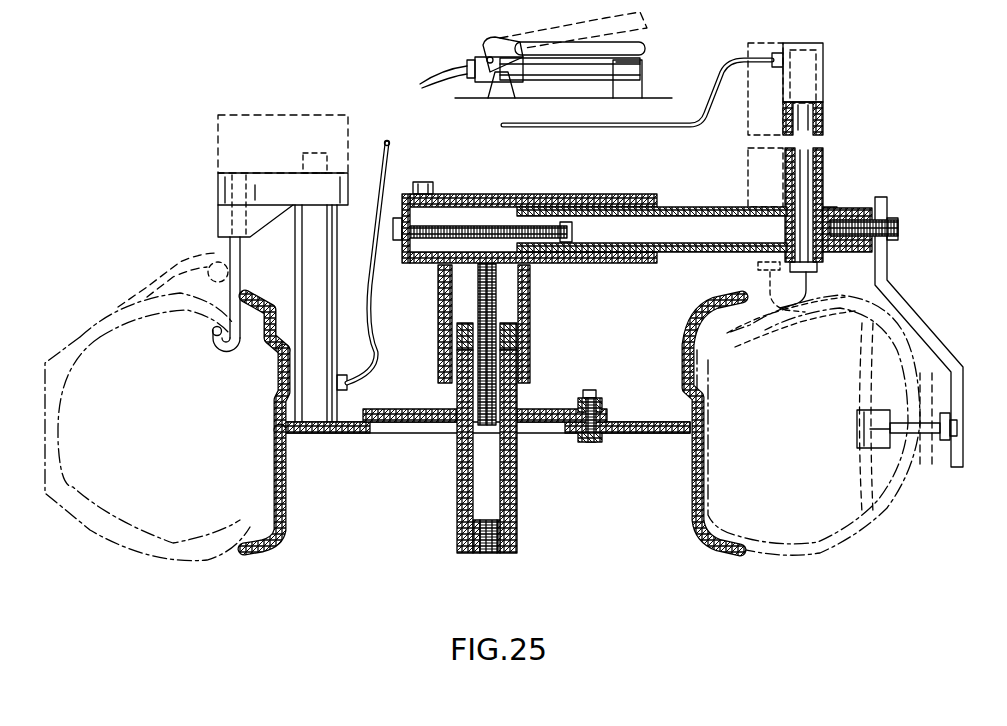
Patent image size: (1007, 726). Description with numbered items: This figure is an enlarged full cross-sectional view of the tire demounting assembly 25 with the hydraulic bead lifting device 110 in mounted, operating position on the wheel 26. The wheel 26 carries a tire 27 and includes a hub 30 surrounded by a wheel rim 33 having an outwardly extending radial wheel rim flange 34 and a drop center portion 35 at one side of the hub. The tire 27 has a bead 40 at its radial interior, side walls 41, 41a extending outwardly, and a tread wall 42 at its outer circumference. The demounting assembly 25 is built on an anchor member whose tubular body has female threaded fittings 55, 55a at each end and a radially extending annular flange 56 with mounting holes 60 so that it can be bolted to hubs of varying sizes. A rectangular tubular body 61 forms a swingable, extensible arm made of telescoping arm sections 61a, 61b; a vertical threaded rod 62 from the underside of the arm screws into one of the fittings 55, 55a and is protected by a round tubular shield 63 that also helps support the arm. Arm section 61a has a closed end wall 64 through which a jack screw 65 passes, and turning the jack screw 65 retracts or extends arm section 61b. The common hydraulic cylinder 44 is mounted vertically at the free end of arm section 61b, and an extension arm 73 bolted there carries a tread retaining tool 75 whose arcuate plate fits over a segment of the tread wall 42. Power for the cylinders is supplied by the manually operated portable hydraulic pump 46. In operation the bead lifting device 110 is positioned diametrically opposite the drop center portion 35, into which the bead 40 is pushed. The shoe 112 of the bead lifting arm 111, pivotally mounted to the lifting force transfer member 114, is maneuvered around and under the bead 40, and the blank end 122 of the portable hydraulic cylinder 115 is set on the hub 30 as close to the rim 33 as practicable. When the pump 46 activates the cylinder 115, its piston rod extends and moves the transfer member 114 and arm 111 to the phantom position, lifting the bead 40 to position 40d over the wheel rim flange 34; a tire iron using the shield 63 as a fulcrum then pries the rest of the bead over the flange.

The tire demounting assembly 25 is at (645, 205).
The wheel 26 is at (660, 488).
The tire 27 is at (80, 294).
The hub 30 is at (402, 436).
The wheel rim 33 is at (292, 480).
The wheel rim flange 34 is at (250, 300).
The drop center portion 35 is at (280, 372).
The bead 40 is at (210, 340).
The lifted bead position 40d is at (220, 262).
The side wall 41 is at (125, 305).
The side wall 41a is at (160, 562).
The tread wall 42 is at (890, 510).
The hydraulic cylinder 44 is at (825, 92).
The portable hydraulic pump 46 is at (650, 68).
The female threaded fitting 55 is at (480, 348).
The female threaded fitting 55a is at (517, 540).
The annular flange 56 is at (548, 410).
The mounting holes 60 is at (600, 400).
The rectangular tubular body 61 is at (567, 196).
The arm section 61a is at (642, 200).
The arm section 61b is at (714, 208).
The threaded rod 62 is at (498, 285).
The shield 63 is at (532, 330).
The closed end wall 64 is at (430, 194).
The jack screw 65 is at (398, 215).
The extension arm 73 is at (892, 270).
The tread retaining tool 75 is at (862, 450).
The hydraulic bead lifting device 110 is at (352, 216).
The bead lifting arm 111 is at (244, 256).
The shoe 112 is at (214, 345).
The lifting force transfer member 114 is at (270, 182).
The portable hydraulic cylinder 115 is at (328, 313).
The blank end 122 is at (316, 405).